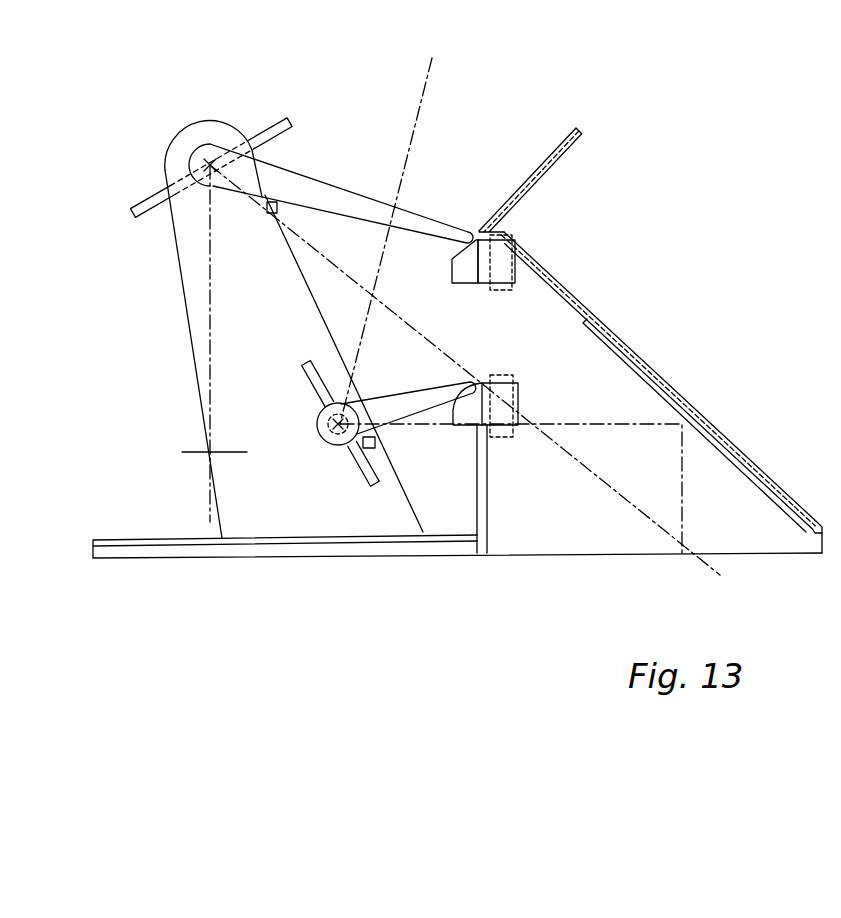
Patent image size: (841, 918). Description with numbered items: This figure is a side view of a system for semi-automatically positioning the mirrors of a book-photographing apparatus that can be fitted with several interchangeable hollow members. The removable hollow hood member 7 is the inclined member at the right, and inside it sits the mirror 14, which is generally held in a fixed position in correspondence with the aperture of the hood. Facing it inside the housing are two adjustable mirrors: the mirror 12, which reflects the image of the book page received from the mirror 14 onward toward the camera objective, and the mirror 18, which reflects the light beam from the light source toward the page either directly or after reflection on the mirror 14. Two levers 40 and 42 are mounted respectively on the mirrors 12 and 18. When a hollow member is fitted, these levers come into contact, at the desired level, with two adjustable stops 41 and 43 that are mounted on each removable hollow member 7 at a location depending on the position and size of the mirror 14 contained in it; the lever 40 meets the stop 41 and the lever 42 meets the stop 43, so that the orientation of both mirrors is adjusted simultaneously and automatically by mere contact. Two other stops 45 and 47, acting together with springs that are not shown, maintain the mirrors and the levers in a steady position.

The hollow hood member 7 is at (625, 343).
The mirror 12 is at (368, 483).
The mirror 14 is at (698, 423).
The mirror 18 is at (137, 206).
The lever 40 is at (383, 402).
The adjustable stop 41 is at (487, 410).
The lever 42 is at (318, 190).
The adjustable stop 43 is at (505, 236).
The stop 45 is at (378, 442).
The stop 47 is at (267, 210).